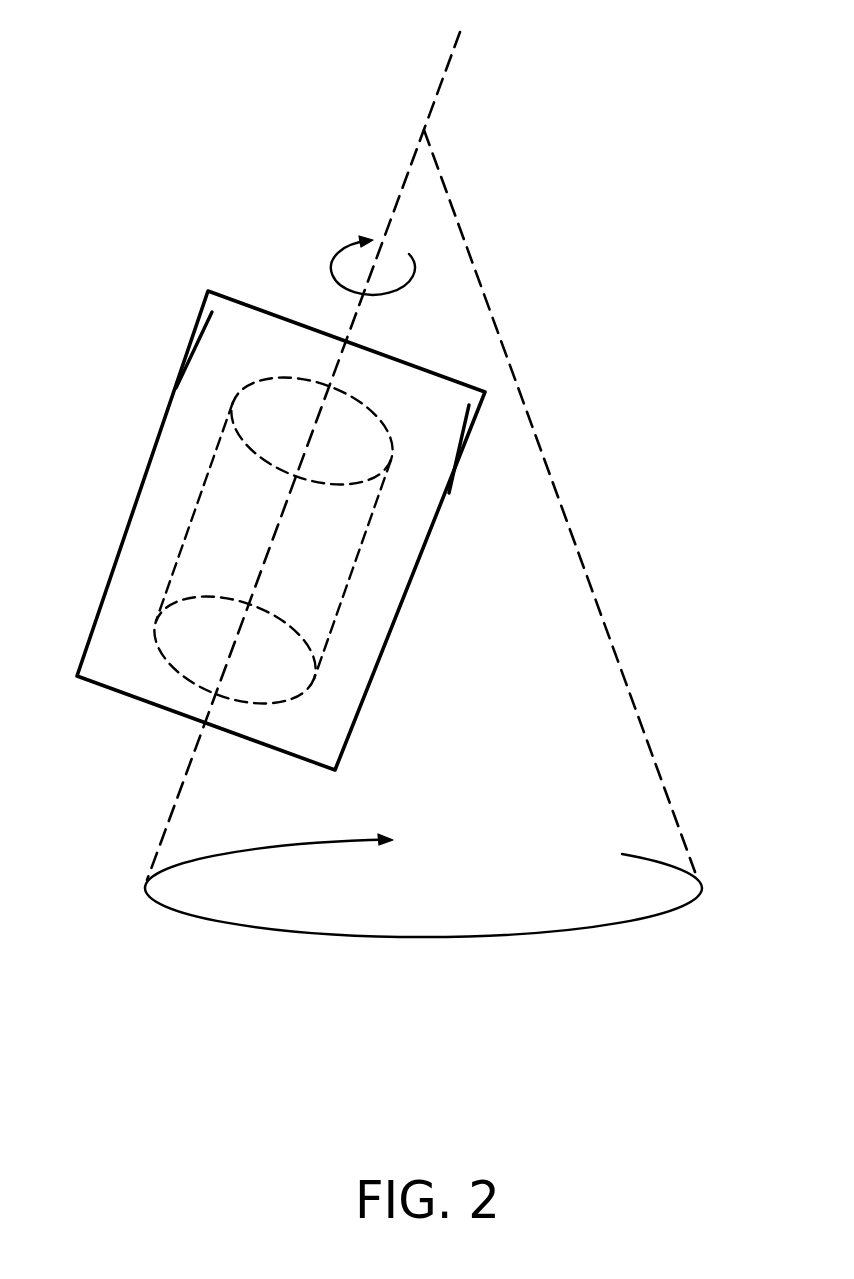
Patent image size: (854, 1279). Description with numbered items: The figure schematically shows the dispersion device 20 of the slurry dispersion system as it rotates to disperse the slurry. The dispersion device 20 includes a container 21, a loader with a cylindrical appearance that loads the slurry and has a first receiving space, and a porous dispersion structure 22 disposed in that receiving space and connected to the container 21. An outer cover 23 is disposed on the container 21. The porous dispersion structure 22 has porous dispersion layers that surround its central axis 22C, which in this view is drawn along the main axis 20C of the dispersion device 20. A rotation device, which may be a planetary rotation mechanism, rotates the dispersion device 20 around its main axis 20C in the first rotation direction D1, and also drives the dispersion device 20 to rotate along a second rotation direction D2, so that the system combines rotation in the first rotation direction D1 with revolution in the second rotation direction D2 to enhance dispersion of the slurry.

The dispersion device 20 is at (311, 500).
The container 21 is at (142, 493).
The porous dispersion structure 22 is at (175, 565).
The outer cover 23 is at (446, 373).
The main axis 20C is at (421, 440).
The central axis 22C is at (421, 440).
The first rotation direction D1 is at (353, 265).
The second rotation direction D2 is at (423, 904).